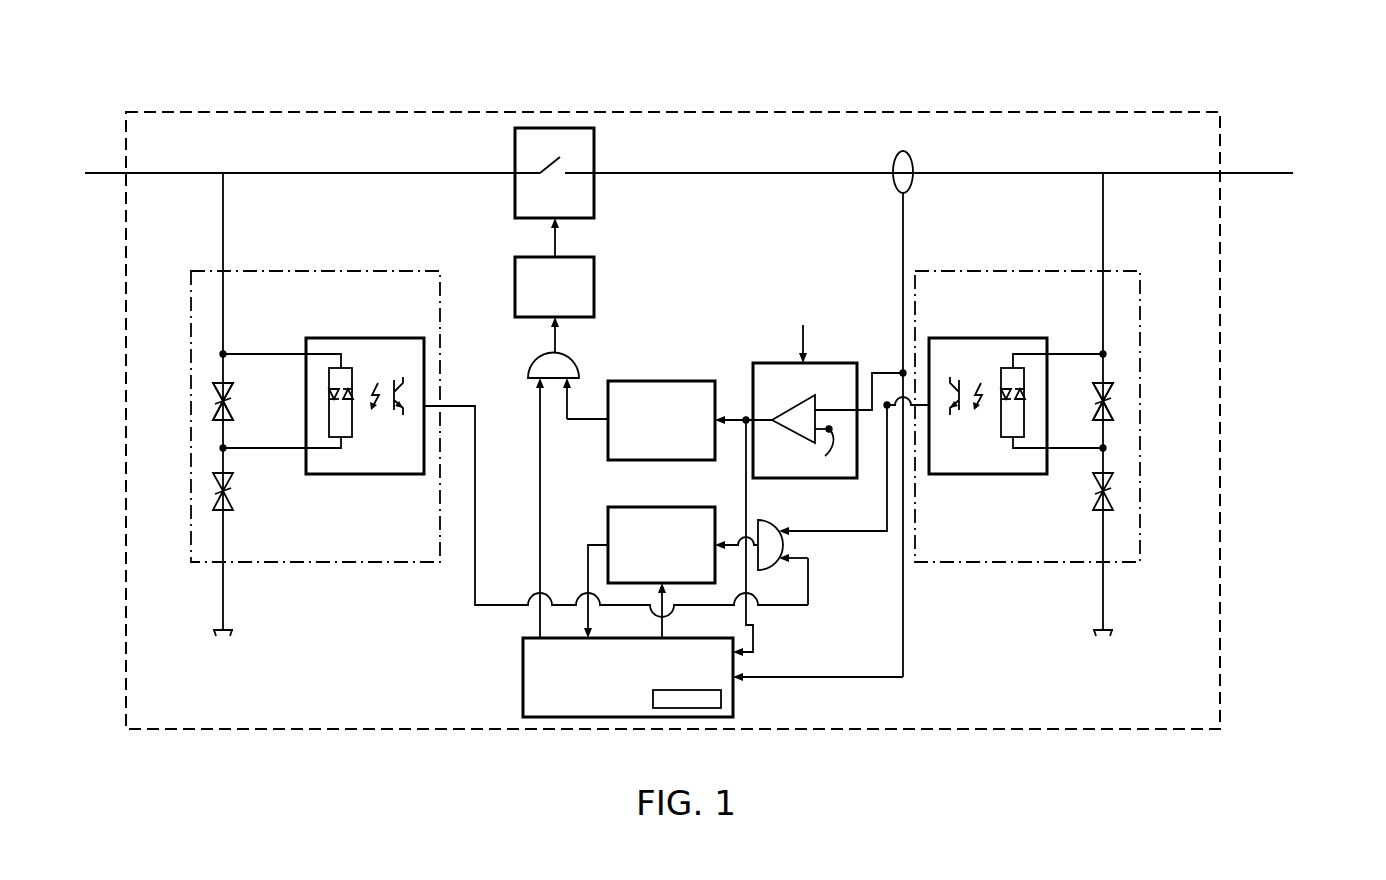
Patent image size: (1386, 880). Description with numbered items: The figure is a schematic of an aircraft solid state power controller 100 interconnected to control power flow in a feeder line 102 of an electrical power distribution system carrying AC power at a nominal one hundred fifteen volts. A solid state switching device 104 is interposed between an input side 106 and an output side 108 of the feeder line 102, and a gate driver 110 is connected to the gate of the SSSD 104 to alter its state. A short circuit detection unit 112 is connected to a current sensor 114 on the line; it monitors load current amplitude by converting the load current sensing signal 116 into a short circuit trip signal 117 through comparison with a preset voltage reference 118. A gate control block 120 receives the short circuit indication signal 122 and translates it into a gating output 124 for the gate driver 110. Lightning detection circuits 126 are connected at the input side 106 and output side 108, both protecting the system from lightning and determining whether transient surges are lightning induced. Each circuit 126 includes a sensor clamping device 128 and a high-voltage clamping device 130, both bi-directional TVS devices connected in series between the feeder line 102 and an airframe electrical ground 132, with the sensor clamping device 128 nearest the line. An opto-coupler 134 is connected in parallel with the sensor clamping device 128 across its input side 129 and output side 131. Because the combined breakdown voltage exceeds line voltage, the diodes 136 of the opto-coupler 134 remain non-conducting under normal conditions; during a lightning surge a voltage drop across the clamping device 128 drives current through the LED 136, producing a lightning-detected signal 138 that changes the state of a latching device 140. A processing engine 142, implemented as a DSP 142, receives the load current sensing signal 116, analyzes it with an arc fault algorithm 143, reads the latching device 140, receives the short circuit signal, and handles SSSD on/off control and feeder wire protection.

The solid state power controller 100 is at (290, 96).
The feeder line 102 is at (1232, 172).
The solid state switching device 104 is at (594, 150).
The input side 106 is at (117, 172).
The output side 108 is at (1160, 172).
The gate driver 110 is at (594, 292).
The short circuit detection unit 112 is at (752, 362).
The current sensor 114 is at (893, 160).
The load current sensing signal 116 is at (903, 225).
The short circuit trip signal 117 is at (746, 487).
The preset voltage reference 118 is at (822, 452).
The gate control block 120 is at (662, 381).
The short circuit indication signal 122 is at (555, 340).
The gating output 124 is at (555, 240).
The lightning detection circuit 126 is at (306, 271).
The sensor clamping device 128 is at (215, 402).
The input side 129 is at (215, 384).
The high-voltage clamping device 130 is at (233, 505).
The output side 131 is at (215, 419).
The airframe electrical ground 132 is at (222, 634).
The opto-coupler 134 is at (345, 474).
The diodes 136 is at (329, 420).
The lightning-detected signal 138 is at (837, 531).
The latching device 140 is at (662, 507).
The processing engine 142 is at (733, 693).
The arc fault algorithm 143 is at (683, 708).